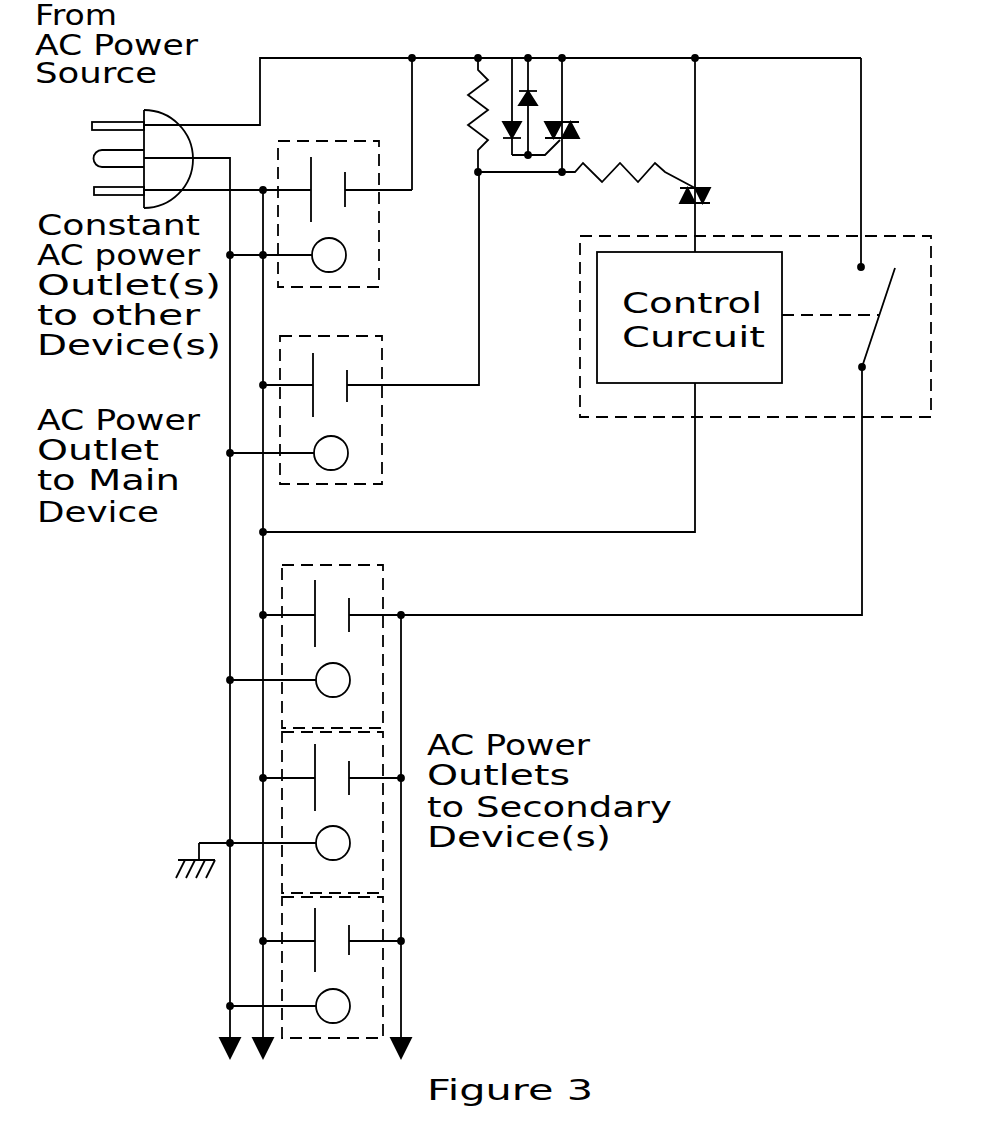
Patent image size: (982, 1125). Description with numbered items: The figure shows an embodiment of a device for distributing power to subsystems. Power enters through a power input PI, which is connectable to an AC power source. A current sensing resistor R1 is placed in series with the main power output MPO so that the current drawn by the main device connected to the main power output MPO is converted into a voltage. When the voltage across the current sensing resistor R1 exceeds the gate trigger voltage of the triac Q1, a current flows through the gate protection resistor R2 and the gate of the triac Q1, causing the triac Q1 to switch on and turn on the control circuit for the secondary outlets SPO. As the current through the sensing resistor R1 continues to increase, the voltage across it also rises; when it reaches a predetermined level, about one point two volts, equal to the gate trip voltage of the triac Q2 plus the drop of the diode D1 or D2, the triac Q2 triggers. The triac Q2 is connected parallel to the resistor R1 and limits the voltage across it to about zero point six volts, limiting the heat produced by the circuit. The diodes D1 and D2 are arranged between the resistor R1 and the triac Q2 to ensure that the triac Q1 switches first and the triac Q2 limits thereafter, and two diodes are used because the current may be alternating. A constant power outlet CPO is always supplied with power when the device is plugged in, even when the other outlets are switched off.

The power input PI is at (115, 159).
The constant power outlet CPO is at (346, 214).
The main power output MPO is at (353, 328).
The secondary outlet SPO is at (333, 802).
The diode D1 is at (503, 82).
The diode D2 is at (547, 83).
The triac Q1 is at (718, 155).
The triac Q2 is at (586, 115).
The current sensing resistor R1 is at (455, 115).
The gate protection resistor R2 is at (628, 192).